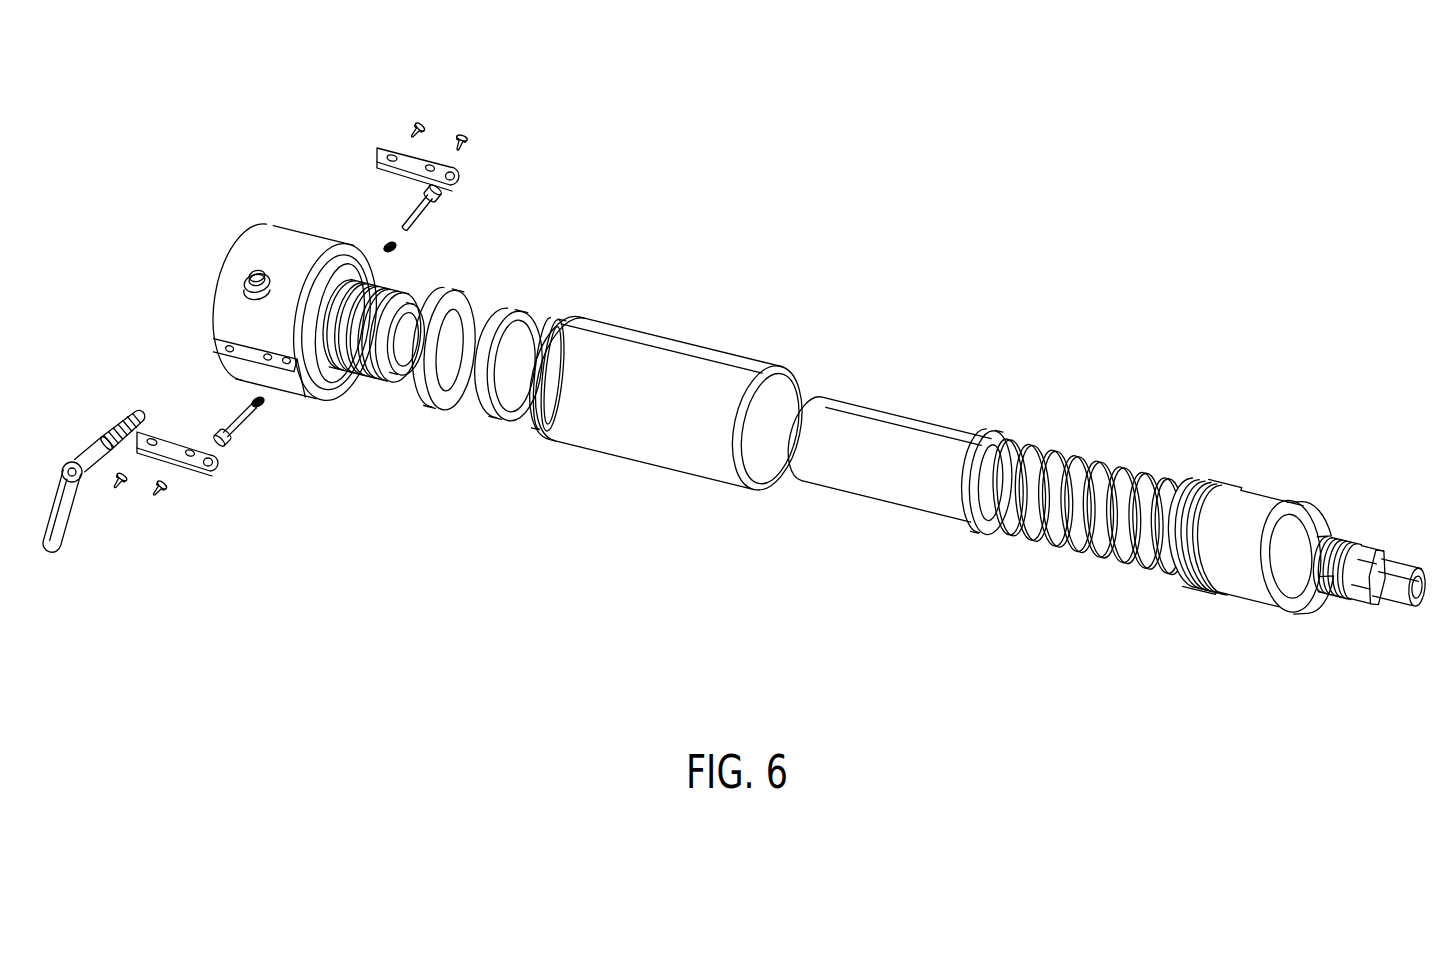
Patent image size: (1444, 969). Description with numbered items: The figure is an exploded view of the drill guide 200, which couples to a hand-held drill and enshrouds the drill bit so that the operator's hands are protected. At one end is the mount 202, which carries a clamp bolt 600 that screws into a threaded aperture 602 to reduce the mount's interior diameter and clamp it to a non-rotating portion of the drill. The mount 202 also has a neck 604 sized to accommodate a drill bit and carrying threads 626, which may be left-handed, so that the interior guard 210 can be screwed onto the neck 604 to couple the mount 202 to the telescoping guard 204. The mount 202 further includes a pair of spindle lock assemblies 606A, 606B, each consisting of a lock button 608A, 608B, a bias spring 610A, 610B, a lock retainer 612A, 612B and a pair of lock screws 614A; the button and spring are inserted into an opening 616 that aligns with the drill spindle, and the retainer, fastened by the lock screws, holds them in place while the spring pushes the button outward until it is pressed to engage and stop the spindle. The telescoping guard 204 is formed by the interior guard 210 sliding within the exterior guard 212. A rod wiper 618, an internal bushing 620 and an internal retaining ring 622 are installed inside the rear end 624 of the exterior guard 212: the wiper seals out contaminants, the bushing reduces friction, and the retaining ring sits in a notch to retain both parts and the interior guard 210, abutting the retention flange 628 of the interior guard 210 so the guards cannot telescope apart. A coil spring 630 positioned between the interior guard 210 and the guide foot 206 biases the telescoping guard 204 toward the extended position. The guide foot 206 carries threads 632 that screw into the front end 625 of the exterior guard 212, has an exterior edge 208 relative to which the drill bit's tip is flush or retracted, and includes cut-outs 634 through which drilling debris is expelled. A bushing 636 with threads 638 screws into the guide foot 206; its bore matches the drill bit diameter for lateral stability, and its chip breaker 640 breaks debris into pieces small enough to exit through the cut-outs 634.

The drill guide 200 is at (986, 70).
The mount 202 is at (258, 231).
The telescoping guard 204 is at (707, 492).
The guide foot 206 is at (1248, 492).
The exterior edge 208 is at (1334, 514).
The interior guard 210 is at (880, 406).
The exterior guard 212 is at (645, 334).
The clamp bolt 600 is at (130, 422).
The threaded aperture 602 is at (250, 273).
The neck 604 is at (377, 395).
The spindle lock assembly 606A is at (514, 130).
The spindle lock assembly 606B is at (279, 480).
The lock button 608A is at (422, 204).
The lock button 608B is at (238, 418).
The bias spring 610A is at (386, 243).
The bias spring 610B is at (252, 400).
The lock retainer 612A is at (378, 155).
The lock retainer 612B is at (200, 466).
The lock screws 614A is at (463, 132).
The opening 616 is at (300, 378).
The rod wiper 618 is at (455, 293).
The internal bushing 620 is at (497, 313).
The internal retaining ring 622 is at (548, 320).
The rear end 624 is at (596, 320).
The front end 625 is at (785, 362).
The threads 626 is at (392, 287).
The retention flange 628 is at (988, 433).
The coil spring 630 is at (1046, 447).
The threads 632 is at (1189, 590).
The cut-outs 634 is at (1263, 594).
The bushing 636 is at (1378, 612).
The threads 638 is at (1341, 603).
The chip breaker 640 is at (1418, 600).